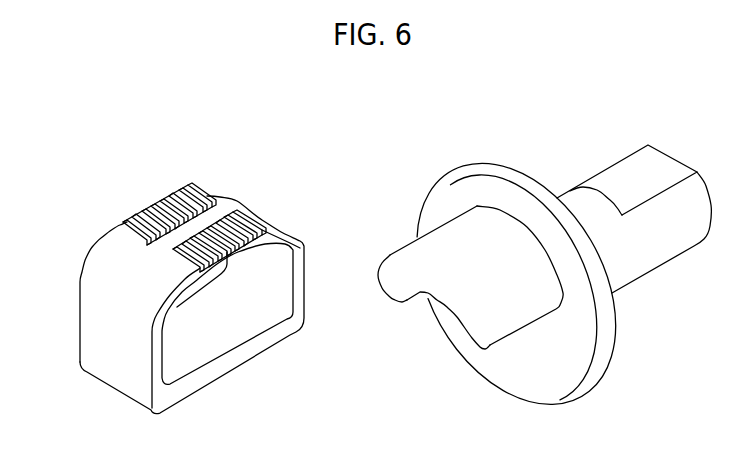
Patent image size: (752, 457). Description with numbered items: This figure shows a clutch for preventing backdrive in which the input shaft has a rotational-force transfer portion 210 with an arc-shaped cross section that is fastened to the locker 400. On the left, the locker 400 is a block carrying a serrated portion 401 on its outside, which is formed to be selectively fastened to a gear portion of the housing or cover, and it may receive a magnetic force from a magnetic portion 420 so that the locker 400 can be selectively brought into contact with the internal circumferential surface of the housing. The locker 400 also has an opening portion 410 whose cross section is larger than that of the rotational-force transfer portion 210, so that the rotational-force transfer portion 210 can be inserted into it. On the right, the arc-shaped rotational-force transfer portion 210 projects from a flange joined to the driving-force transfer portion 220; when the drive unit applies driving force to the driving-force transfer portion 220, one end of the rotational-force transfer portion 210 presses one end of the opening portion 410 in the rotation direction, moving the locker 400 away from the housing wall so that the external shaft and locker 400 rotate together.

The locker 400 is at (237, 200).
The serrated portion 401 is at (187, 249).
The opening portion 410 is at (215, 323).
The magnetic portion 420 is at (193, 225).
The rotational-force transfer portion 210 is at (448, 240).
The driving-force transfer portion 220 is at (627, 170).